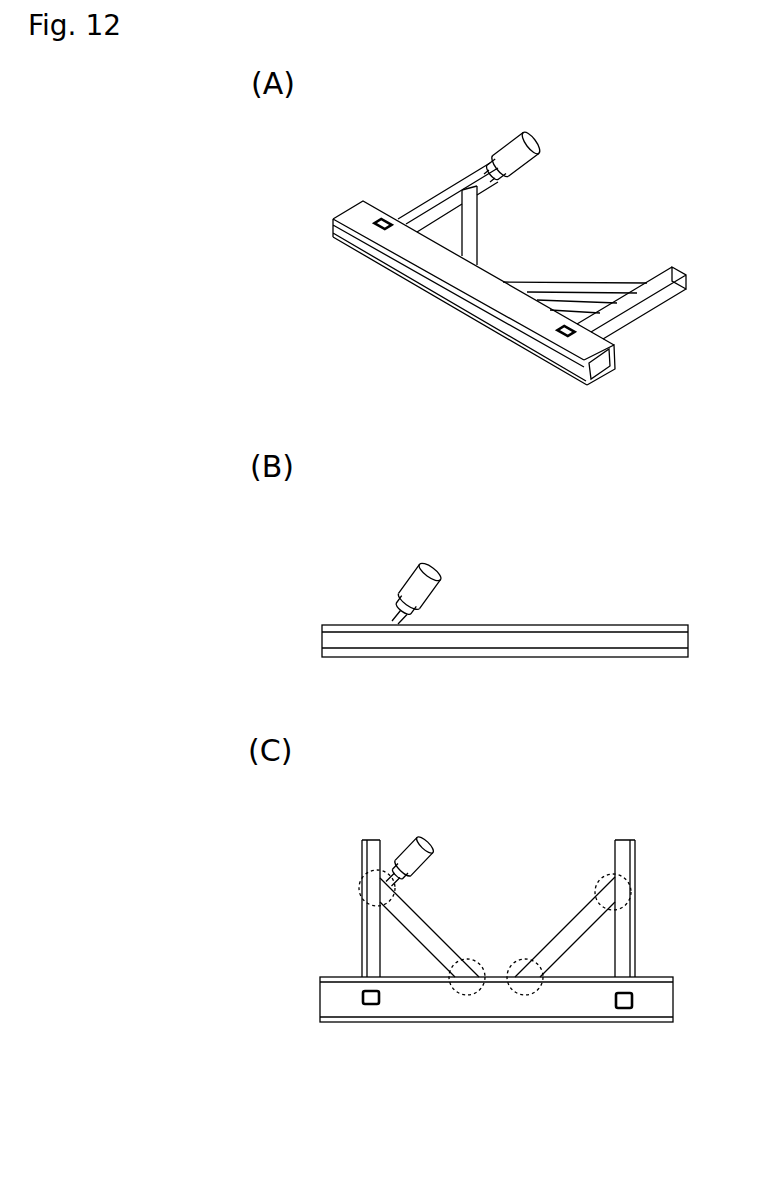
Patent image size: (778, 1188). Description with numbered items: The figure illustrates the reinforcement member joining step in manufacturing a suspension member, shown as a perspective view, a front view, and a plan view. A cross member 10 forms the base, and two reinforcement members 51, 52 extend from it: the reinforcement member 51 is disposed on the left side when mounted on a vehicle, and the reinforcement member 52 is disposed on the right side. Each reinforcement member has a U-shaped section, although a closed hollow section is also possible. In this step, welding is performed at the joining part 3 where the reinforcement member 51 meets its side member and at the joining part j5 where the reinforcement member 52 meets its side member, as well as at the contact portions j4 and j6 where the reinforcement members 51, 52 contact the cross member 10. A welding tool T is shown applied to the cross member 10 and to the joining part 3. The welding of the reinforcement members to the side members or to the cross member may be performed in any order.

In FIG. 12A, the cross member 10 is at (474, 293).
In FIG. 12B, the cross member 10 is at (505, 622).
In FIG. 12C, the cross member 10 is at (496, 999).
In FIG. 12A, the welding tool / torch T is at (513, 156).
In FIG. 12B, the welding tool / torch T is at (432, 580).
In FIG. 12C, the welding tool / torch T is at (411, 860).
In FIG. 12C, the joint portion 3 is at (362, 886).
In FIG. 12C, the reinforcement member 51 is at (428, 927).
In FIG. 12C, the reinforcement member 52 is at (572, 925).
In FIG. 12C, the contact portion j4 is at (474, 962).
In FIG. 12C, the joining part j5 is at (634, 883).
In FIG. 12C, the contact portion j6 is at (518, 962).